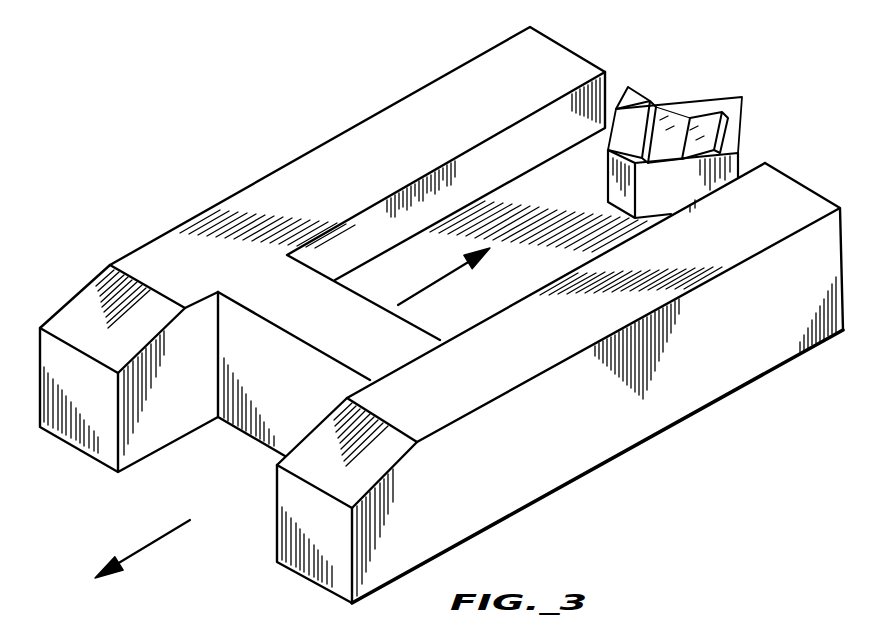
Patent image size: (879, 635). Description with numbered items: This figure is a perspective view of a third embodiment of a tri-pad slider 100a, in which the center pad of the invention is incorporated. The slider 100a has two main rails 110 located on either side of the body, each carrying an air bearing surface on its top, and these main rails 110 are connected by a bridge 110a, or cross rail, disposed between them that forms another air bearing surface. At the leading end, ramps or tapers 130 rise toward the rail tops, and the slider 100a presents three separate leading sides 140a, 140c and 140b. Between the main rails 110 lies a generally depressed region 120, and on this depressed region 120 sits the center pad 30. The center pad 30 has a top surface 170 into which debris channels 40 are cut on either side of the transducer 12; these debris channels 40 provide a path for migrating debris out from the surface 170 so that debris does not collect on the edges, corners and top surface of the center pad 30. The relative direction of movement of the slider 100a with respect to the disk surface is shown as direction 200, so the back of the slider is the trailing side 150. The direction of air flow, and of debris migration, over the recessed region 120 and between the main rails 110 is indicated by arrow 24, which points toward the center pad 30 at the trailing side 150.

The tri-pad slider 100a is at (661, 431).
The main rails 110 is at (362, 185).
The bridge 110a is at (347, 326).
The depressed region 120 is at (528, 279).
The ramps or tapers 130 is at (135, 337).
The leading side 140a is at (110, 394).
The leading side 140b is at (347, 531).
The leading side 140c is at (290, 381).
The trailing side 150 is at (683, 122).
The center pad 30 is at (651, 144).
The debris channels 40 is at (648, 100).
The transducer 12 is at (678, 114).
The top surface 170 is at (623, 147).
The arrow 24 is at (438, 279).
The direction 200 is at (152, 547).